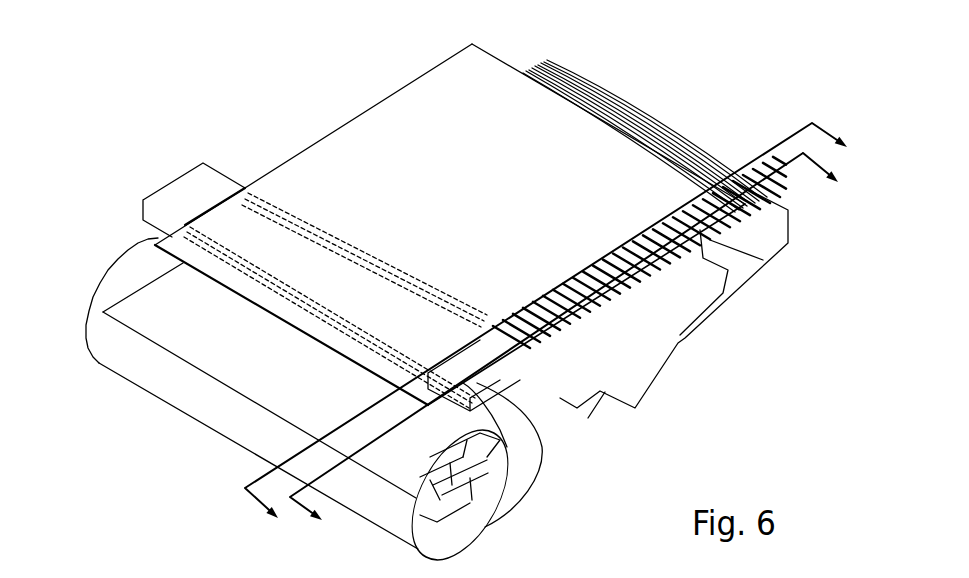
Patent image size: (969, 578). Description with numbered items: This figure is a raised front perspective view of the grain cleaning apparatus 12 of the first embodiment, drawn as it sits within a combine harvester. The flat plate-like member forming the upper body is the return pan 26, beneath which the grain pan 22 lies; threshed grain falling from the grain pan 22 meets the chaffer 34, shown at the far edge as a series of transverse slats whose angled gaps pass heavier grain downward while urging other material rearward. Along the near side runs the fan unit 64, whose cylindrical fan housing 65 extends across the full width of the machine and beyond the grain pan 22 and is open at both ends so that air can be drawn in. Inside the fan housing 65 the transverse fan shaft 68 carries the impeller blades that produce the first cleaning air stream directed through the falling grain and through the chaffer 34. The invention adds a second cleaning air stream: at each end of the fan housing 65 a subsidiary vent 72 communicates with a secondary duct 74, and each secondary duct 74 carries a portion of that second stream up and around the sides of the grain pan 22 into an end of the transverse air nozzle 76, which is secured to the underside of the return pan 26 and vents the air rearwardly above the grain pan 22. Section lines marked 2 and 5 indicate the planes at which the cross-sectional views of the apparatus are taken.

The grain cleaning apparatus 12 is at (100, 102).
The grain pan 22 is at (175, 355).
The return pan 26 is at (403, 85).
The chaffer 34 is at (568, 73).
The fan unit 64 is at (200, 457).
The fan housing 65 is at (388, 530).
The fan shaft 68 is at (475, 507).
The subsidiary vents 72 is at (480, 520).
The secondary ducts 74 is at (208, 168).
The transverse air nozzle 76 is at (367, 283).
The section line 2- 2 is at (554, 335).
The section line 5- 5 is at (572, 352).